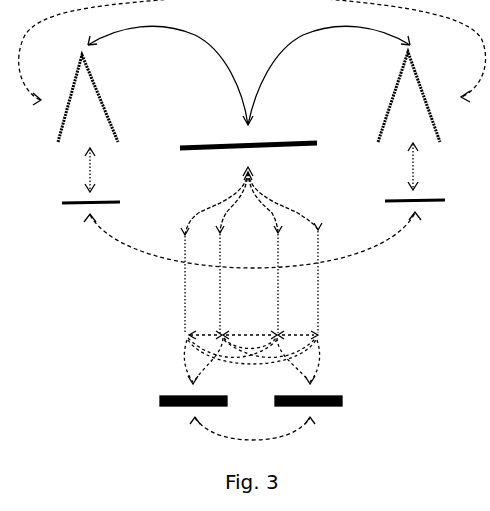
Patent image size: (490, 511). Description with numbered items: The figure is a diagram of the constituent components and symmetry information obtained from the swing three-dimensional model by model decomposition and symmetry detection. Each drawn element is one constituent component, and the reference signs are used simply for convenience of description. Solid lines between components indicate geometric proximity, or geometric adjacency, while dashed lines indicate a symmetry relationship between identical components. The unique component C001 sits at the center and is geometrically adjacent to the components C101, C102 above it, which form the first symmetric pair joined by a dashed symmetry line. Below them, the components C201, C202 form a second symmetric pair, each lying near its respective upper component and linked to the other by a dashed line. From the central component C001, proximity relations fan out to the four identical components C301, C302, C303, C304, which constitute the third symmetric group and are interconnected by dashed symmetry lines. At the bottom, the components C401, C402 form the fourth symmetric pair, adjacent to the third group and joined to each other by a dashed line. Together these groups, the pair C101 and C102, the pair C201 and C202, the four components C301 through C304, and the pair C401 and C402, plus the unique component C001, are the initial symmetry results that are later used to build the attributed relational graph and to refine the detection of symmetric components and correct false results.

The constituent component C101 is at (64, 98).
The constituent component C102 is at (433, 97).
The unique component C001 is at (248, 132).
The constituent component C201 is at (66, 203).
The constituent component C202 is at (437, 200).
The constituent component C301 is at (180, 356).
The constituent component C302 is at (229, 346).
The constituent component C303 is at (275, 346).
The constituent component C304 is at (335, 356).
The constituent component C401 is at (187, 416).
The constituent component C402 is at (315, 416).